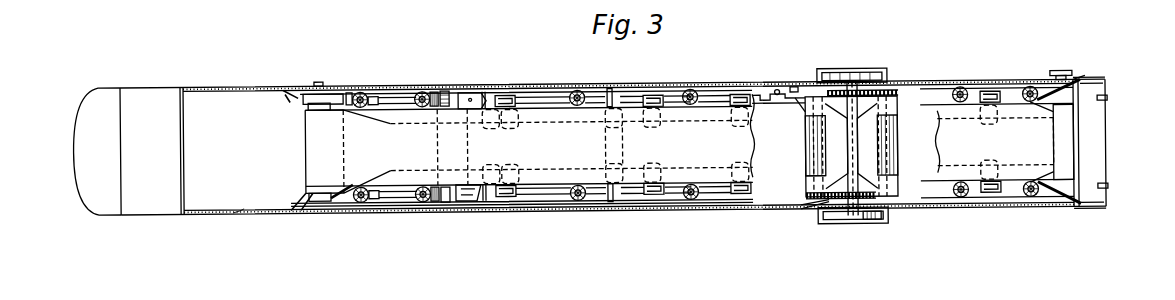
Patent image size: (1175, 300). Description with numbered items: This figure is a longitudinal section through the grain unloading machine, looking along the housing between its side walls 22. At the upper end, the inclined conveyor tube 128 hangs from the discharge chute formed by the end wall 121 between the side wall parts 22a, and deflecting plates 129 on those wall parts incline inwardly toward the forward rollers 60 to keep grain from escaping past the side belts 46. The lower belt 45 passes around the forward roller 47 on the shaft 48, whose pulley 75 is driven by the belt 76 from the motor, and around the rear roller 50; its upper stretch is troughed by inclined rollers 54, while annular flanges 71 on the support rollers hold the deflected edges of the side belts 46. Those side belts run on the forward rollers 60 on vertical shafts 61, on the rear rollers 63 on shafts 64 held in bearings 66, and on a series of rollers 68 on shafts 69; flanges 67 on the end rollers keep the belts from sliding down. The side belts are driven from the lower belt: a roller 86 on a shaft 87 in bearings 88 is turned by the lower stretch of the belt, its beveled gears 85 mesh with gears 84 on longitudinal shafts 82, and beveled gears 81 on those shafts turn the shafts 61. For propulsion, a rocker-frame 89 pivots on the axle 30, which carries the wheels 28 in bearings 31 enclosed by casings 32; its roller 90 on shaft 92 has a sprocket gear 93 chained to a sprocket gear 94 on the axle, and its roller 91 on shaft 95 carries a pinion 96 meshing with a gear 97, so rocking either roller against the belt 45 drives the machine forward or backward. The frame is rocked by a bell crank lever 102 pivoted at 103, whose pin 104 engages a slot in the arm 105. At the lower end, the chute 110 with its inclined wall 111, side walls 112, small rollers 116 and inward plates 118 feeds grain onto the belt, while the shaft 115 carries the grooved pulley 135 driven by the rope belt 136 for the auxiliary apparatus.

The side walls 22 is at (728, 215).
The side wall parts 22a is at (236, 214).
The side belts 46 is at (556, 215).
The inclined conveyor tube 128 is at (84, 120).
The end wall 121 is at (168, 100).
The lower inclined wall 111 is at (1090, 172).
The chute 110 is at (1105, 150).
The side walls of chute 112 is at (1103, 89).
The small rollers 116 is at (1107, 107).
The grooved pulley 135 is at (1066, 78).
The rope belt 136 is at (1085, 84).
The shafts 64 is at (1038, 105).
The roller 47 is at (318, 163).
The lower belt 45 is at (318, 130).
The shaft 115 is at (940, 158).
The roller 50 is at (1053, 152).
The inclined plates 118 is at (1050, 120).
The deflecting plates 129 is at (285, 98).
The shaft 48 is at (295, 217).
The pulley 75 is at (325, 96).
The belt 76 is at (352, 95).
The rollers 60 is at (362, 95).
The vertical shafts 61 is at (375, 98).
The longitudinal shafts 82 is at (400, 203).
The beveled gears 81 is at (370, 205).
The bearings 66 is at (358, 205).
The beveled gears 84 is at (422, 94).
The beveled gears 85 is at (440, 94).
The bearings 88 is at (447, 95).
The roller 86 is at (480, 98).
The flanges 67 is at (458, 205).
The shaft 87 is at (483, 95).
The inclined rollers 54 is at (512, 100).
The annular ribs or flanges 71 is at (604, 127).
The shafts 69 is at (577, 94).
The rollers 68 is at (608, 93).
The arm 105 is at (652, 100).
The rollers 63 is at (1030, 94).
The bell crank lever 102 is at (766, 99).
The pivot 103 is at (780, 95).
The pin 104 is at (806, 104).
The sprocket gear 94 is at (843, 78).
The rocker-frame 89 is at (868, 97).
The sprocket gear 93 is at (893, 118).
The shaft 92 is at (897, 120).
The roller 91 is at (805, 141).
The roller 90 is at (897, 151).
The axle 30 is at (847, 156).
The shaft 95 is at (812, 172).
The pinion 96 is at (808, 202).
The gear 97 is at (877, 202).
The wheels 28 is at (836, 230).
The casings 32 is at (870, 230).
The bearings 31 is at (815, 215).